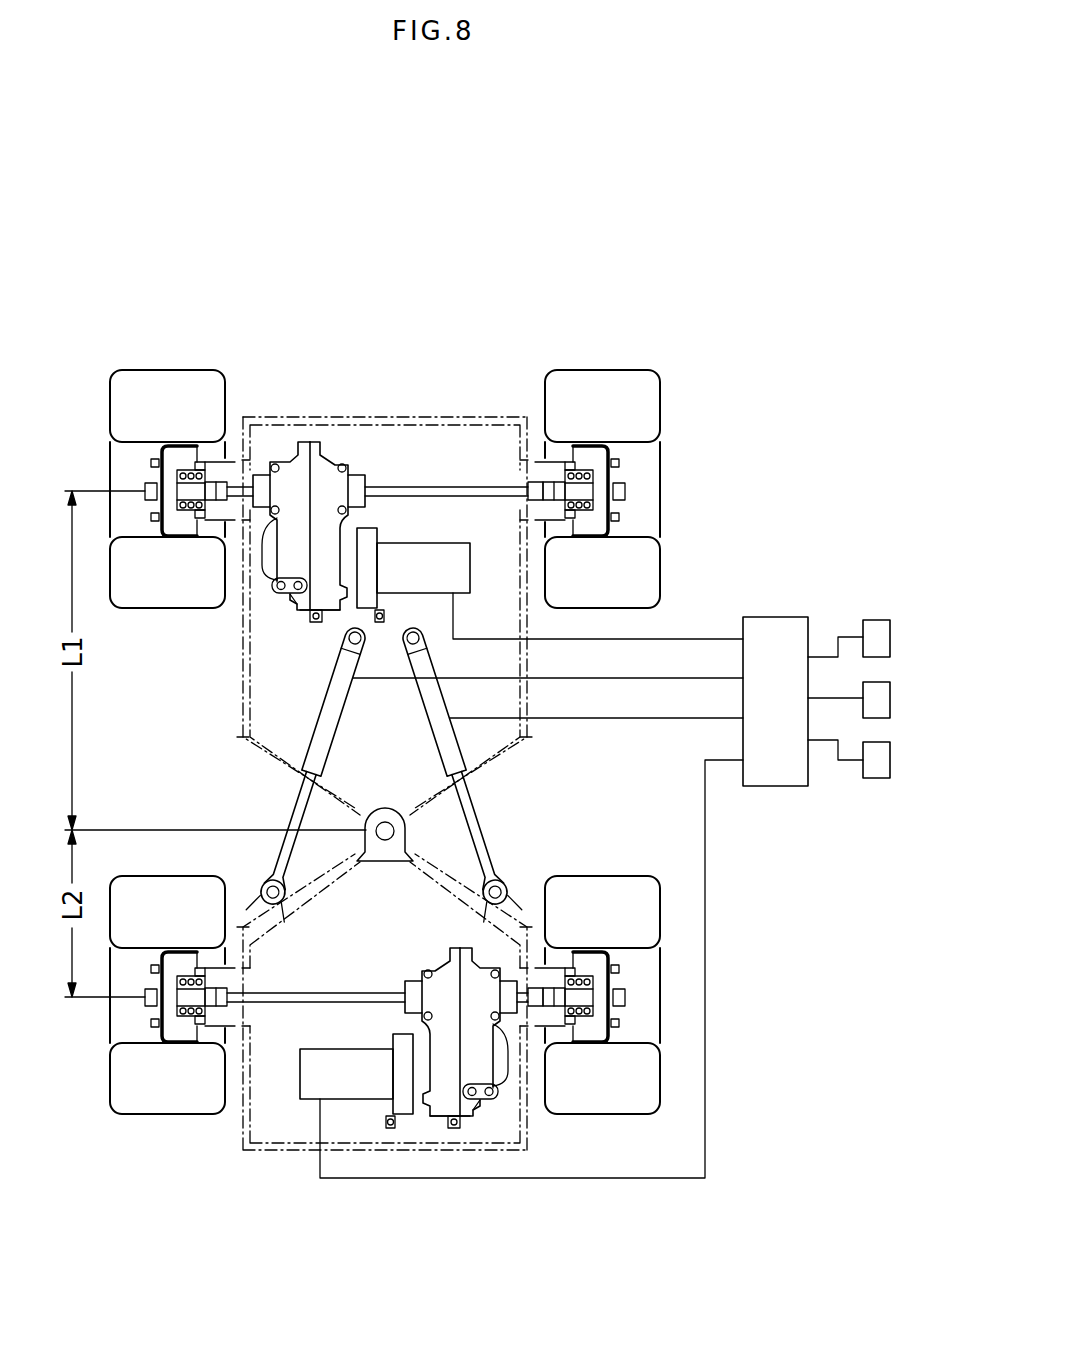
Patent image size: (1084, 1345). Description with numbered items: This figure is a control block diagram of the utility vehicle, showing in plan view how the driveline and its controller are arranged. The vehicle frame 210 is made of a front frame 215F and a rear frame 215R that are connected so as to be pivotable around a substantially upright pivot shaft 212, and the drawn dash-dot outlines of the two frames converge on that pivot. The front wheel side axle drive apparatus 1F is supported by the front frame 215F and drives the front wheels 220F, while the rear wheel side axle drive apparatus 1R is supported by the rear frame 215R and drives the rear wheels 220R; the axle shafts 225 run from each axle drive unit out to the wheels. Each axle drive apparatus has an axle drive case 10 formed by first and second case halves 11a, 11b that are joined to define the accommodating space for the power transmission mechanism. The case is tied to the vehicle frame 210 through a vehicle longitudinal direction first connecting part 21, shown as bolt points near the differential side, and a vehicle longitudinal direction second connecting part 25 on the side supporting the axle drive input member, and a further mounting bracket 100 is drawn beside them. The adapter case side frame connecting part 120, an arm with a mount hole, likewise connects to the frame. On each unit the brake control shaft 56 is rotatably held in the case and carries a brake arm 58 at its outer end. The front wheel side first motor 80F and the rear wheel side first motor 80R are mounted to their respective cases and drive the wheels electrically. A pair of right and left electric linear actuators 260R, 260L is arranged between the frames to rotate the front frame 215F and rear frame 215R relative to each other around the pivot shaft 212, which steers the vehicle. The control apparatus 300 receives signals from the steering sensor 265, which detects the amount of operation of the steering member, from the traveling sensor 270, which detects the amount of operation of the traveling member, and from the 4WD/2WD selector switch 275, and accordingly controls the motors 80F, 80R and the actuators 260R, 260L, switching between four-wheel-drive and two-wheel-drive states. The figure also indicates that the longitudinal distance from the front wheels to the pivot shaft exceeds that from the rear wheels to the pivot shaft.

The axle drive case 10 is at (386, 794).
The first case half 11a is at (337, 463).
The second case half 11b is at (297, 440).
The vehicle longitudinal direction first connecting part 21 is at (274, 464).
The vehicle longitudinal direction second connecting part 25 is at (308, 622).
The brake control shaft 56 is at (308, 624).
The brake arm 58 is at (280, 591).
The front wheel side first motor 80F is at (457, 566).
The rear wheel side first motor 80R is at (352, 1075).
The mounting bracket 100 is at (346, 605).
The adapter case side frame connecting part 120 is at (390, 612).
The front wheel side axle drive apparatus 1F is at (264, 616).
The rear wheel side axle drive apparatus 1R is at (499, 1118).
The vehicle frame 210 is at (316, 404).
The pivot shaft 212 is at (385, 812).
The front frame 215F is at (440, 411).
The rear frame 215R is at (263, 1160).
The front wheels 220F is at (147, 378).
The rear wheels 220R is at (143, 1100).
The axle shaft 225 is at (234, 484).
The left electric linear actuator 260L is at (318, 741).
The right electric linear actuator 260R is at (453, 746).
The steering sensor 265 is at (876, 626).
The traveling sensor 270 is at (882, 702).
The 4WD/2WD selector switch 275 is at (877, 772).
The control apparatus 300 is at (773, 778).